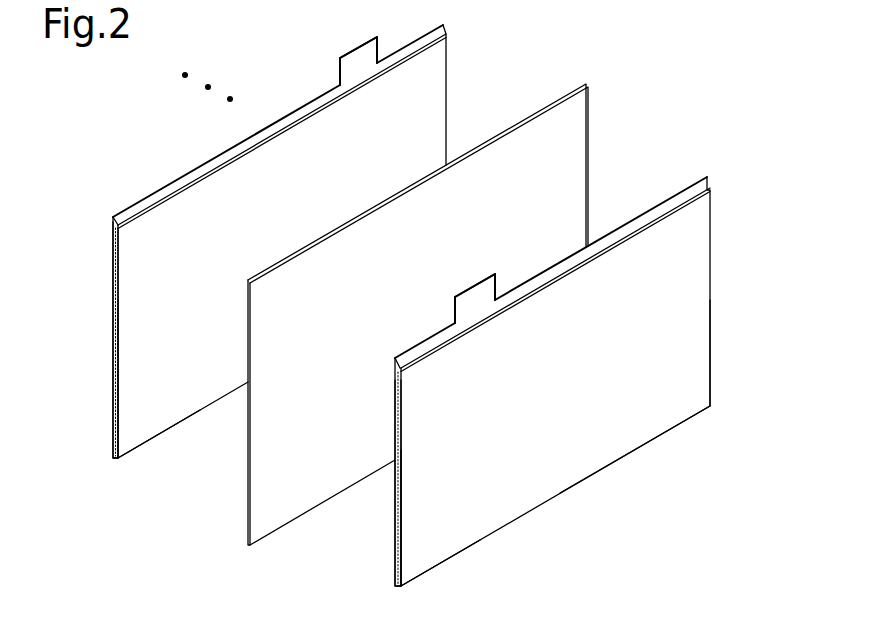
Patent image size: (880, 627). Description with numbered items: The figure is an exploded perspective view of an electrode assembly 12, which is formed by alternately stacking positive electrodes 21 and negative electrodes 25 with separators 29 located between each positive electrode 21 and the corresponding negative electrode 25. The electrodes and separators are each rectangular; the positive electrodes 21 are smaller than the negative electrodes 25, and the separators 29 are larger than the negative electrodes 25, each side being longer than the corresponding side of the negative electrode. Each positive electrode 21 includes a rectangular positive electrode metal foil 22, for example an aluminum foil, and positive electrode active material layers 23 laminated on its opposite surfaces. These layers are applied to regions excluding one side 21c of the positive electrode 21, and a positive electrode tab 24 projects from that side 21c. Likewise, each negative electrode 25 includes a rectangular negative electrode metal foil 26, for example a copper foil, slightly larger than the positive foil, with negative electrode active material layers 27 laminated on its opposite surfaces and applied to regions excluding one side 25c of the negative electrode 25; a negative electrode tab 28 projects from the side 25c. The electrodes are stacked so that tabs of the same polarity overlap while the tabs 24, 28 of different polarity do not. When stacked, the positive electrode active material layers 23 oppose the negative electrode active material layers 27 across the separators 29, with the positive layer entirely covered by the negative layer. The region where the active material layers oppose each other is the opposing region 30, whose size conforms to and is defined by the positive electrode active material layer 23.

The electrode assembly 12 is at (761, 103).
The positive electrode 21 is at (710, 232).
The side of the positive electrode 21c is at (657, 205).
The positive electrode metal foil 22 is at (396, 523).
The positive electrode active material layers 23 is at (418, 556).
The positive electrode tab 24 is at (475, 305).
The negative electrode 25 is at (446, 83).
The side of the negative electrode 25c is at (273, 123).
The negative electrode metal foil 26 is at (113, 365).
The negative electrode active material layers 27 is at (133, 416).
The negative electrode tab 28 is at (358, 66).
The separator 29 is at (588, 140).
The opposing region 30 is at (585, 457).